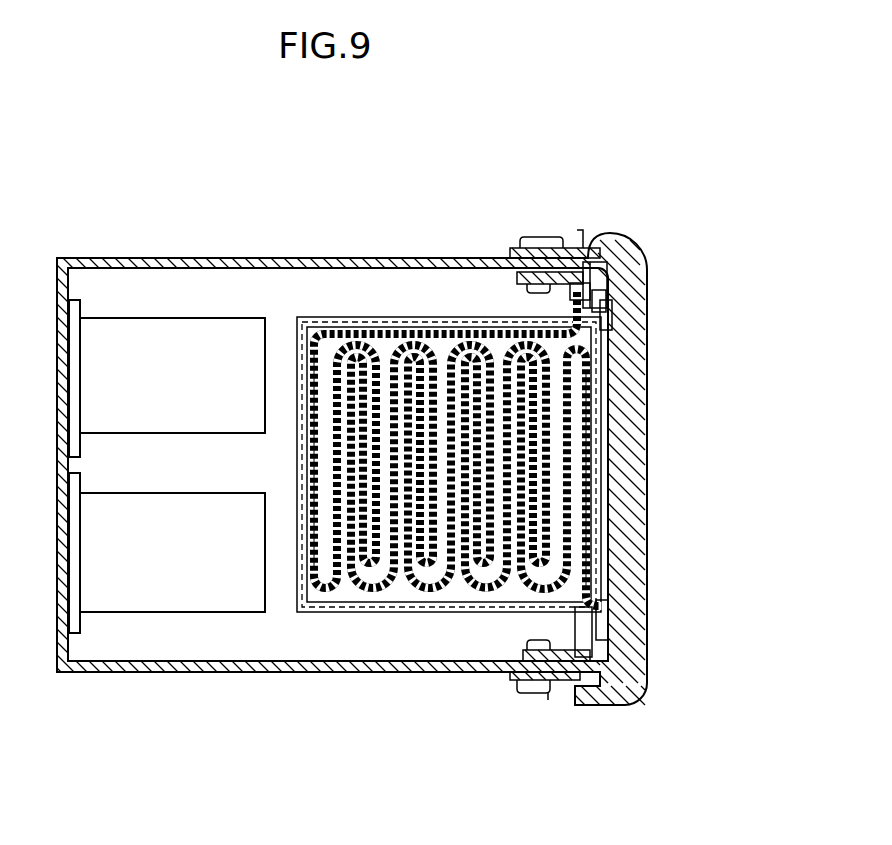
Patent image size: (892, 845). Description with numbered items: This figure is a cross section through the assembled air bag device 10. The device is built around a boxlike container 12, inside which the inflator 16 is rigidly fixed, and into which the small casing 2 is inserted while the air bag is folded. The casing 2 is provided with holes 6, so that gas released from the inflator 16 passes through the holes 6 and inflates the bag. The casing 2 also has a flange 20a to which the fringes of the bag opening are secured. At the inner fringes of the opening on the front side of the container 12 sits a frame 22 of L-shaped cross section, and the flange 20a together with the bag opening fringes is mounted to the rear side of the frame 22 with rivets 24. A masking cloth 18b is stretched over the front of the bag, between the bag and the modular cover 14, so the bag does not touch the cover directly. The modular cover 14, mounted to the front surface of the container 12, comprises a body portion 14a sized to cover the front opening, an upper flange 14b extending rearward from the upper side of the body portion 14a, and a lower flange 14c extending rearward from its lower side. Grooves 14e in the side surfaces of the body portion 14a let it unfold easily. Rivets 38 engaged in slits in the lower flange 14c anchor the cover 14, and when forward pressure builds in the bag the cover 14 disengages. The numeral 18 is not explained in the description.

The air bag device 10 is at (652, 218).
The casing 2 is at (373, 613).
The holes 6 is at (312, 362).
The container 12 is at (292, 673).
The modular cover 14 is at (648, 459).
The body portion 14a is at (648, 508).
The upper flange 14b is at (563, 250).
The lower flange 14c is at (522, 690).
The grooves 14e is at (610, 334).
The inflator 16 is at (190, 318).
The serpentine cooling pipe 18 is at (326, 613).
The masking cloth 18b is at (590, 402).
The flange 20a is at (568, 310).
The frame 22 is at (608, 280).
The rivets 24 is at (610, 306).
The rivets 38 is at (548, 696).